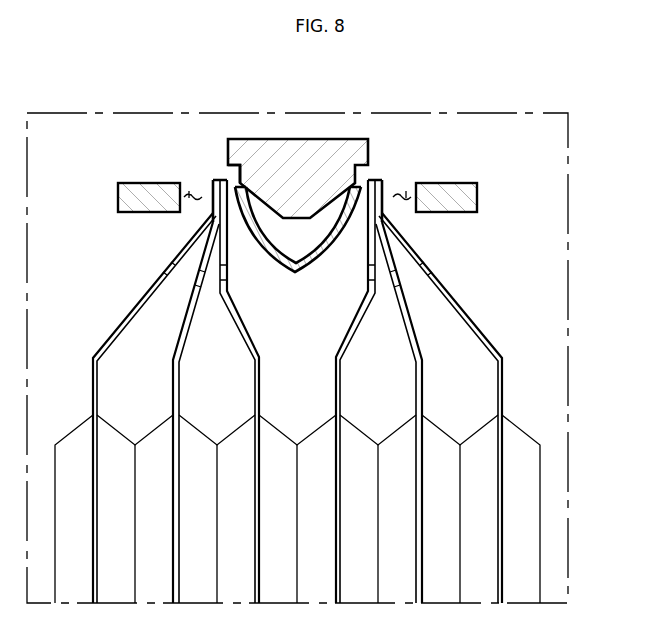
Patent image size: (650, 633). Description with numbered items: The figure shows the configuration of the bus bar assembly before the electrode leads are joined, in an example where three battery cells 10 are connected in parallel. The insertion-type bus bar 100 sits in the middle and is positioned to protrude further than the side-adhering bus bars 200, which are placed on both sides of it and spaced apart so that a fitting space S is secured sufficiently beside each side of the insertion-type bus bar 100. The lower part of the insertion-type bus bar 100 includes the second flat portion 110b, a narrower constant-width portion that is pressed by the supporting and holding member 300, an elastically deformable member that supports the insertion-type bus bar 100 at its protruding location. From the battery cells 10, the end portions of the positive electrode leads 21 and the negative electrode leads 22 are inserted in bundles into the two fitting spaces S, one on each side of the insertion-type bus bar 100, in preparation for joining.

The battery cell 10 is at (523, 530).
The positive electrode lead 21 is at (220, 179).
The negative electrode lead 22 is at (375, 179).
The insertion-type bus bar 100 is at (296, 139).
The second flat portion 110b is at (234, 164).
The side-adhering bus bar 200 is at (147, 183).
The supporting and holding member 300 is at (297, 273).
The fitting space S is at (190, 193).